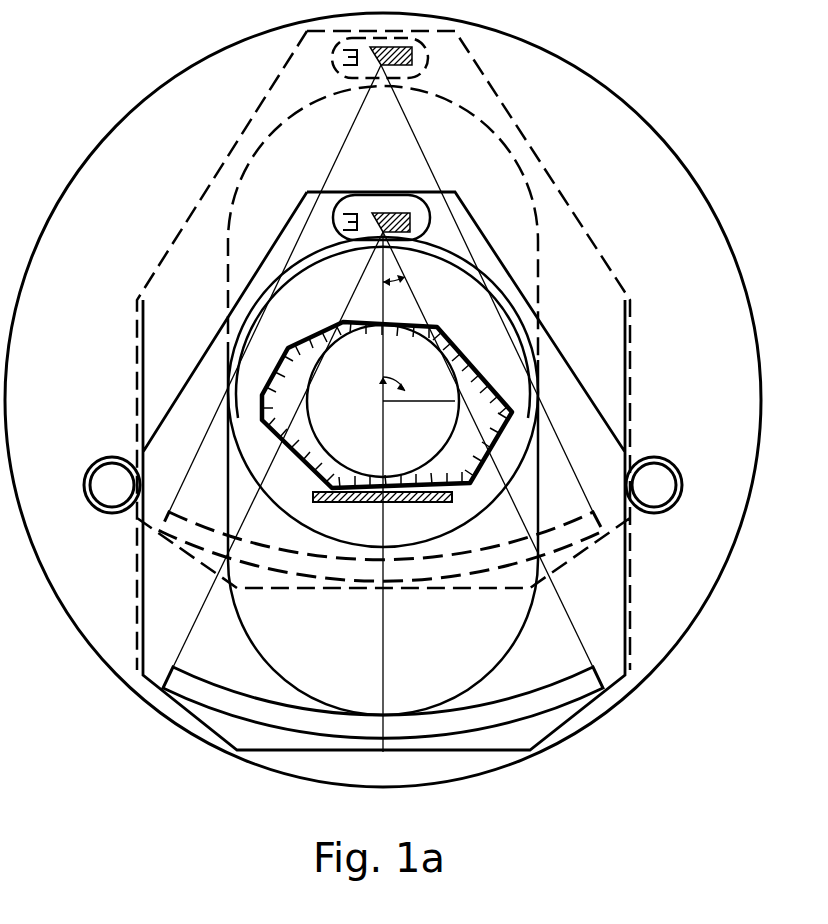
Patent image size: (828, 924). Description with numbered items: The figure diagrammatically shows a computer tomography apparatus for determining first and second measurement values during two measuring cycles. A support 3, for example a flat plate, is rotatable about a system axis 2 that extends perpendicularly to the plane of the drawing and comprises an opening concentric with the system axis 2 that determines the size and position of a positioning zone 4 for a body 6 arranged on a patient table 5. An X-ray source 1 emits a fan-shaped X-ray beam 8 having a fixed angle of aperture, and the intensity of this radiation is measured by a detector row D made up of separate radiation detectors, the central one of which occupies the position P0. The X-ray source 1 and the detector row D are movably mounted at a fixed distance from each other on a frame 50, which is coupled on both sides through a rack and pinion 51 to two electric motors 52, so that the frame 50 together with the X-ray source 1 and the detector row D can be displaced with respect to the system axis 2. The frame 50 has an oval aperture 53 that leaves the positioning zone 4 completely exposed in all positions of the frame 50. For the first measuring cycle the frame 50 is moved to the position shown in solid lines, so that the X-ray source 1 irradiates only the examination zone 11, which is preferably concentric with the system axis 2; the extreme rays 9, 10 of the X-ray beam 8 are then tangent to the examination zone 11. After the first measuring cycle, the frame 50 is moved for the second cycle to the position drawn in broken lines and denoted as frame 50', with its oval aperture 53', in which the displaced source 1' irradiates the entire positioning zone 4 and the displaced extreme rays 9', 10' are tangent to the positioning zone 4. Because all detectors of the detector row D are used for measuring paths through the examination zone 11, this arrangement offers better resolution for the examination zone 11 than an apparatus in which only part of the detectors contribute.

The X-ray source 1 is at (395, 224).
The X-ray source in second measuring position 1' is at (393, 60).
The system axis 2 is at (540, 325).
The support 3 is at (645, 162).
The positioning zone 4 is at (312, 313).
The patient table 5 is at (400, 502).
The body 6 is at (507, 443).
The X-ray beam 8 is at (370, 302).
The extreme ray 9 is at (383, 485).
The extreme ray in second measuring position 9' is at (381, 323).
The extreme ray 10 is at (498, 460).
The extreme ray in second measuring position 10' is at (489, 288).
The examination zone 11 is at (420, 433).
The frame 50 is at (384, 471).
The frame in second measuring position 50' is at (383, 350).
The rack and pinion 51 is at (105, 543).
The electric motor 52 is at (112, 477).
The oval aperture 53 is at (383, 537).
The oval aperture in second measuring position 53' is at (383, 223).
The detector row D is at (185, 683).
The central detector position P0 is at (385, 752).